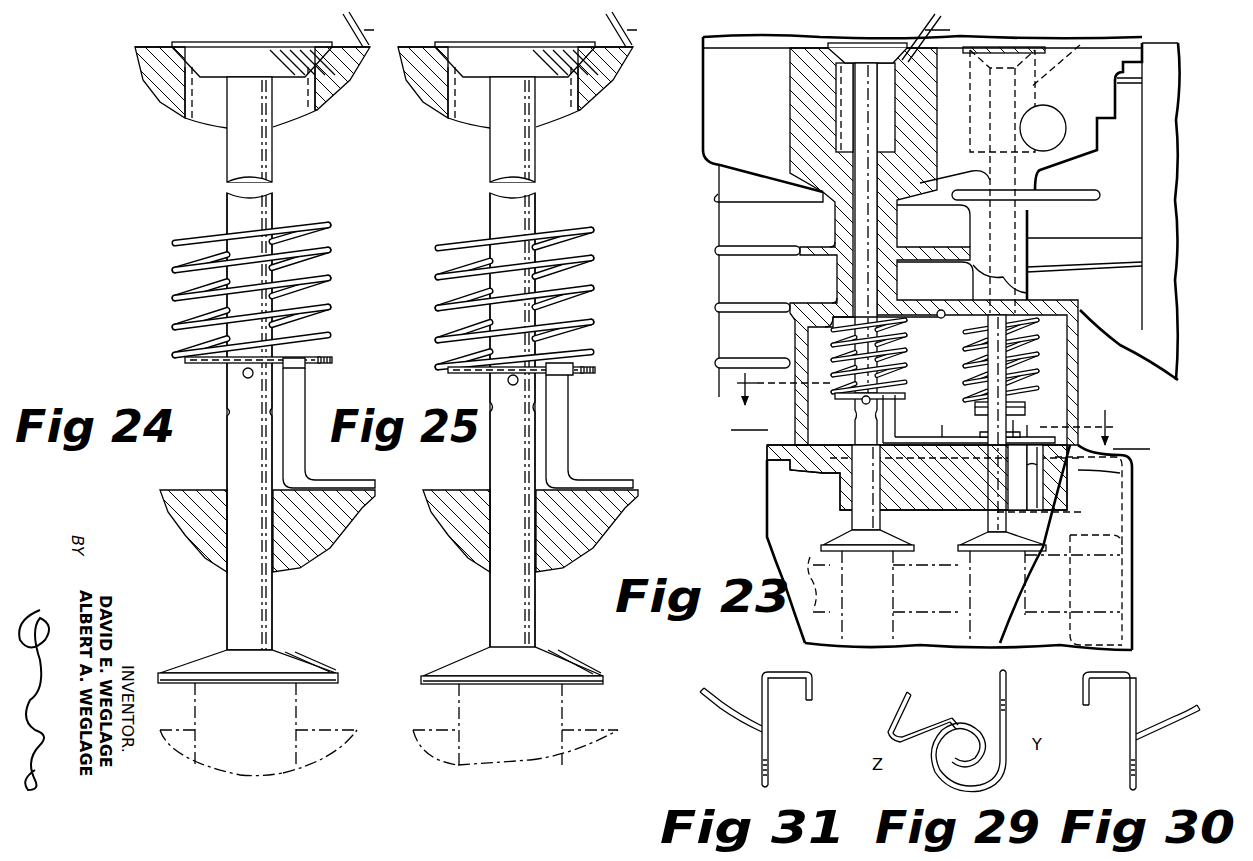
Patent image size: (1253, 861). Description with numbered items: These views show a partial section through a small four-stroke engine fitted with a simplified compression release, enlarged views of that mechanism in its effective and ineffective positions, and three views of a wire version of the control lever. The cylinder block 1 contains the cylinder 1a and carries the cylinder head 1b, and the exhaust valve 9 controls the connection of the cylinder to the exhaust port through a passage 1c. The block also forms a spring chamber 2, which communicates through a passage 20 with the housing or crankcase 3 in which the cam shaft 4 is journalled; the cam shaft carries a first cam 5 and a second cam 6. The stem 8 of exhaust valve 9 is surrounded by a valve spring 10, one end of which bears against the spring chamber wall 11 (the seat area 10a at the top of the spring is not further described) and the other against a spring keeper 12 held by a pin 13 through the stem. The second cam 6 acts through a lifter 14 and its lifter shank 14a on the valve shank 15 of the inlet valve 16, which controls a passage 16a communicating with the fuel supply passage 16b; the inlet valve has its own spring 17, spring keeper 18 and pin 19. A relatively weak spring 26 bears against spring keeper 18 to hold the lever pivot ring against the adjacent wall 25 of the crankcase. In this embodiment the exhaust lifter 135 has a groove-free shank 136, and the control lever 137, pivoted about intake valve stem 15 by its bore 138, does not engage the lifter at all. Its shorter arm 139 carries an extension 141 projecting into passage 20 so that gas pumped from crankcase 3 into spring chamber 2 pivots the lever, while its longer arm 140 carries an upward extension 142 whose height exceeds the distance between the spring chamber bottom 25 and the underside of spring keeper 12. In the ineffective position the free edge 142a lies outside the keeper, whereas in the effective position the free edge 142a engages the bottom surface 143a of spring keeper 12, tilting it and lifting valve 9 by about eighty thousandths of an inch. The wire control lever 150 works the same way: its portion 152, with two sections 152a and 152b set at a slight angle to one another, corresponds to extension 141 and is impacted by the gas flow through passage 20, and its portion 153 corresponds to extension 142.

In FIG. 23, the cylinder block 1 is at (706, 165).
In FIG. 23, the cylinder 1a is at (736, 270).
In FIG. 23, the cylinder head 1b is at (732, 42).
In FIG. 24, the passage 1c is at (293, 105).
In FIG. 25, the passage 1c is at (515, 95).
In FIG. 23, the passage 1c is at (840, 120).
In FIG. 23, the spring chamber 2 is at (812, 400).
In FIG. 23, the housing or crankcase 3 is at (1125, 545).
In FIG. 24, the cam shaft 4 is at (308, 747).
In FIG. 25, the cam shaft 4 is at (515, 752).
In FIG. 23, the cam shaft 4 is at (815, 605).
In FIG. 24, the first cam 5 is at (263, 717).
In FIG. 25, the first cam 5 is at (515, 724).
In FIG. 23, the first cam 5 is at (880, 610).
In FIG. 23, the second cam 6 is at (975, 610).
In FIG. 24, the valve stem 8 is at (257, 152).
In FIG. 25, the valve stem 8 is at (534, 129).
In FIG. 23, the valve stem 8 is at (866, 228).
In FIG. 24, the exhaust valve 9 is at (252, 50).
In FIG. 25, the exhaust valve 9 is at (554, 44).
In FIG. 23, the exhaust valve 9 is at (862, 48).
In FIG. 24, the valve spring 10 is at (330, 252).
In FIG. 25, the valve spring 10 is at (533, 298).
In FIG. 23, the valve spring 10 is at (895, 320).
In FIG. 23, the spring seat 10a is at (822, 313).
In FIG. 23, the spring chamber wall 11 is at (941, 310).
In FIG. 24, the spring keeper 12 is at (185, 362).
In FIG. 25, the spring keeper 12 is at (490, 369).
In FIG. 23, the spring keeper 12 is at (852, 398).
In FIG. 23, the pin 13 is at (847, 388).
In FIG. 23, the lifter 14 is at (980, 540).
In FIG. 23, the lifter shank 14a is at (1000, 525).
In FIG. 23, the valve shank 15 is at (1000, 294).
In FIG. 29, the valve shank 15 is at (943, 717).
In FIG. 23, the inlet valve 16 is at (1018, 57).
In FIG. 23, the passage 16a is at (1072, 50).
In FIG. 23, the fuel supply passage 16b is at (1053, 122).
In FIG. 23, the spring 17 is at (1036, 332).
In FIG. 23, the spring keeper 18 is at (1040, 388).
In FIG. 23, the pin 19 is at (1040, 400).
In FIG. 23, the passage 20 is at (1033, 488).
In FIG. 24, the spring chamber bottom 25 is at (173, 490).
In FIG. 25, the spring chamber bottom 25 is at (530, 520).
In FIG. 23, the spring chamber bottom 25 is at (777, 433).
In FIG. 23, the spring 26 is at (1010, 405).
In FIG. 24, the lifter 135 is at (206, 650).
In FIG. 25, the lifter 135 is at (509, 659).
In FIG. 23, the lifter 135 is at (845, 532).
In FIG. 24, the groove-free shank 136 is at (233, 583).
In FIG. 25, the groove-free shank 136 is at (481, 421).
In FIG. 23, the groove-free shank 136 is at (860, 487).
In FIG. 24, the control lever 137 is at (360, 483).
In FIG. 25, the control lever 137 is at (595, 469).
In FIG. 23, the control lever 137 is at (903, 436).
In FIG. 23, the bore 138 is at (993, 487).
In FIG. 23, the arm 139 is at (1030, 445).
In FIG. 23, the lever arm 140 is at (943, 437).
In FIG. 23, the extension 141 is at (1120, 470).
In FIG. 24, the extension 142 is at (303, 422).
In FIG. 25, the extension 142 is at (585, 426).
In FIG. 23, the extension 142 is at (895, 398).
In FIG. 24, the free edge 142a is at (310, 356).
In FIG. 25, the free edge 142a is at (593, 347).
In FIG. 24, the bottom surface 143a is at (319, 362).
In FIG. 25, the bottom surface 143a is at (624, 373).
In FIG. 29, the control lever 150 is at (1008, 726).
In FIG. 31, the portion 152 is at (742, 730).
In FIG. 29, the portion 152 is at (893, 712).
In FIG. 30, the portion 152 is at (1152, 742).
In FIG. 30, the section 152a is at (1152, 732).
In FIG. 30, the section 152b is at (1198, 708).
In FIG. 31, the portion 153 is at (787, 729).
In FIG. 30, the portion 153 is at (1140, 682).